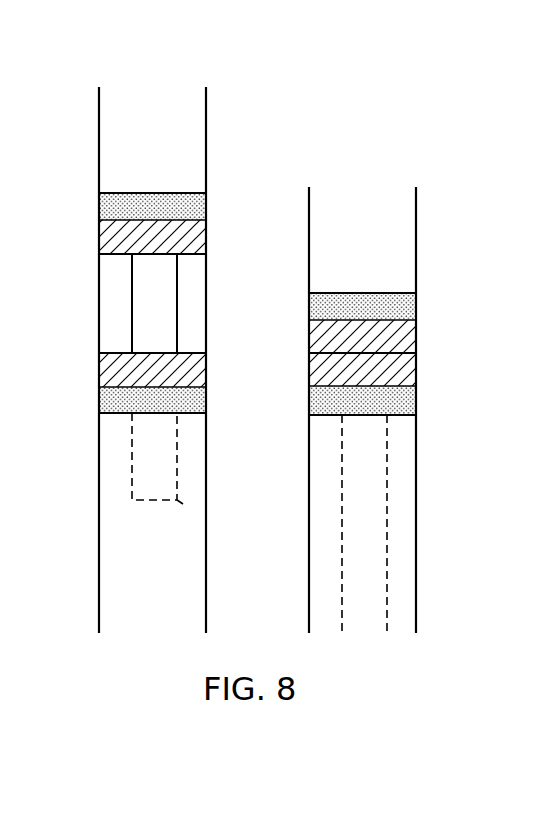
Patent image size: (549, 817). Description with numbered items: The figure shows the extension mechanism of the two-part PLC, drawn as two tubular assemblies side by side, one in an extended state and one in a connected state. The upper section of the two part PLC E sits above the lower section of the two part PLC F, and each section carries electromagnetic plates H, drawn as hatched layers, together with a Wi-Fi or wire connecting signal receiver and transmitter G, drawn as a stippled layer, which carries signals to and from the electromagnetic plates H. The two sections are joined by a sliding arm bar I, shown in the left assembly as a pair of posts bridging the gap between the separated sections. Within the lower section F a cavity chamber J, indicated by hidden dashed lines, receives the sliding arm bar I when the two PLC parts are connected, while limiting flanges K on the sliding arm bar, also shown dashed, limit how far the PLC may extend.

The upper section of the two part PLC E is at (148, 90).
The lower section of the two part PLC F is at (107, 553).
The Wi-Fi or wire connecting signal receiver and transmitter G is at (99, 205).
The electromagnetic plates H is at (99, 235).
The sliding arm bar I is at (147, 292).
The cavity chamber J is at (367, 492).
The limiting flanges of the sliding arm bar K is at (128, 500).